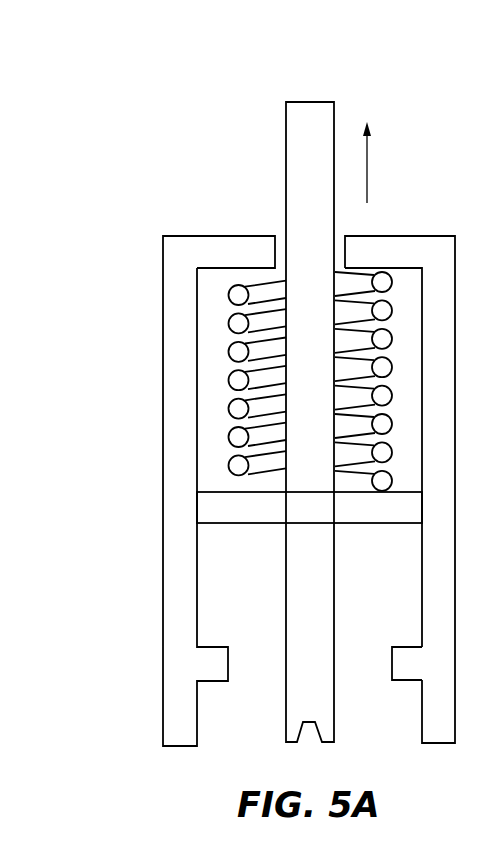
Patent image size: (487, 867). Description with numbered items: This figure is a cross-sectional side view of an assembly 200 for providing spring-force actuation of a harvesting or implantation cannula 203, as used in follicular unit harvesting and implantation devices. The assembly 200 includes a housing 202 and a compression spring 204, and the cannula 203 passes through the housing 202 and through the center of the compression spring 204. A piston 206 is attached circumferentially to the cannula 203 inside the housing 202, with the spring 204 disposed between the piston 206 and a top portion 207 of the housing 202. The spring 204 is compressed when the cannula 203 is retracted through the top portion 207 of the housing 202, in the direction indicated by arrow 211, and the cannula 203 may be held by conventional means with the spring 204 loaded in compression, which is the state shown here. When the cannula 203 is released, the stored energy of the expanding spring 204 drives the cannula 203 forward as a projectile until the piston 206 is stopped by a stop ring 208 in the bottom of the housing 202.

The assembly 200 is at (154, 204).
The housing 202 is at (163, 370).
The cannula 203 is at (335, 724).
The compression spring 204 is at (400, 268).
The piston 206 is at (207, 524).
The top portion of the housing 207 is at (212, 268).
The stop ring 208 is at (403, 645).
The arrow 211 is at (367, 152).